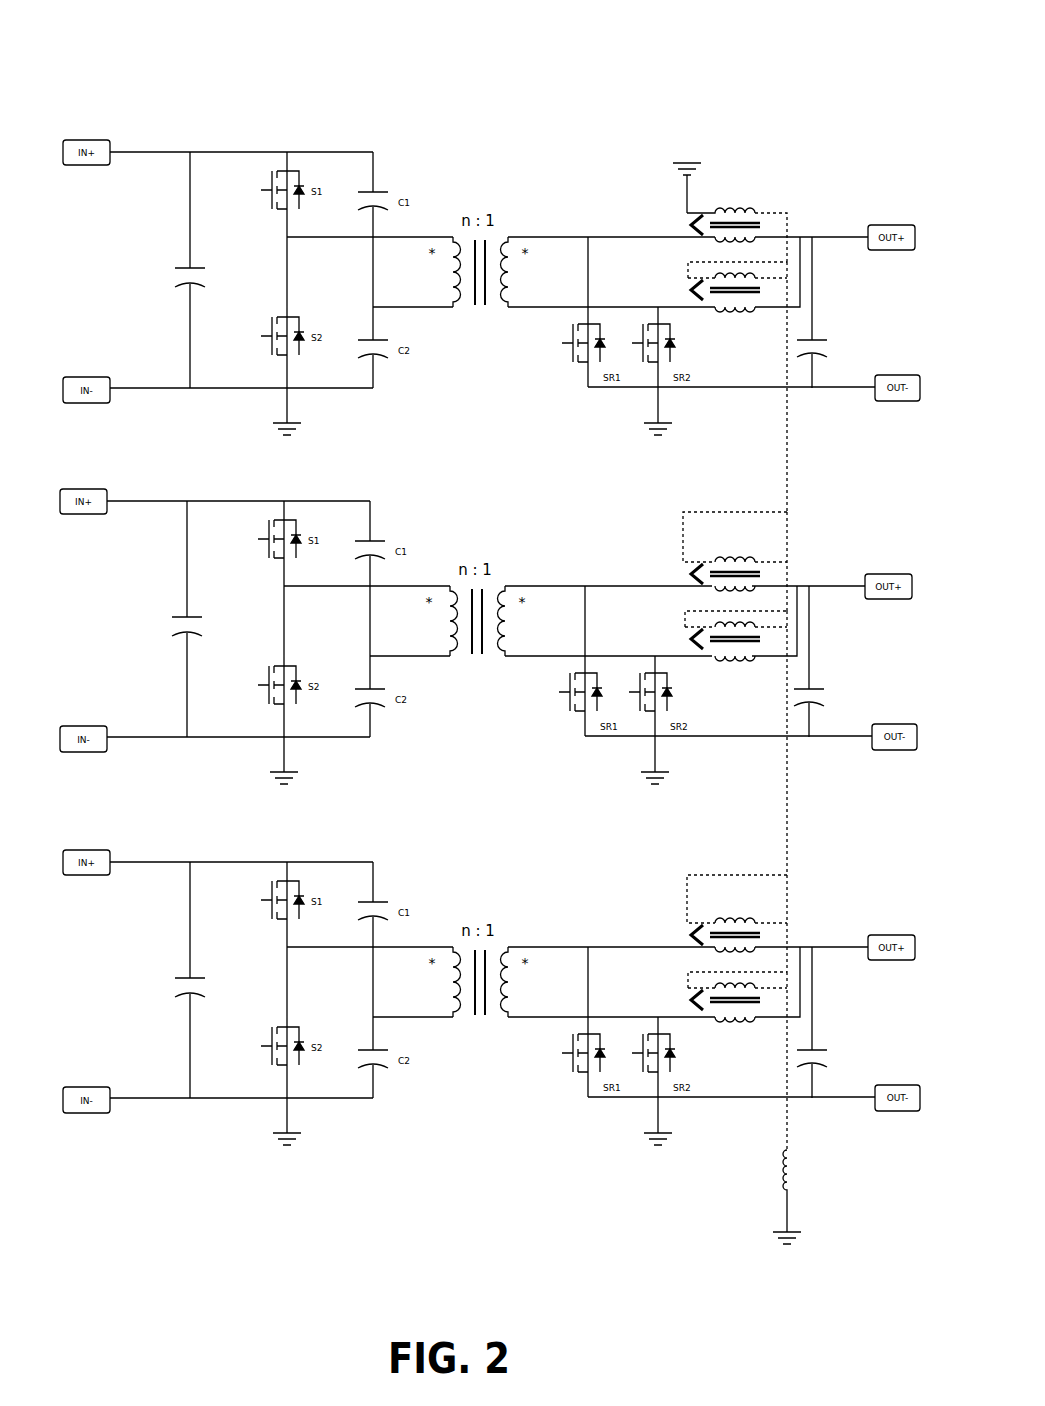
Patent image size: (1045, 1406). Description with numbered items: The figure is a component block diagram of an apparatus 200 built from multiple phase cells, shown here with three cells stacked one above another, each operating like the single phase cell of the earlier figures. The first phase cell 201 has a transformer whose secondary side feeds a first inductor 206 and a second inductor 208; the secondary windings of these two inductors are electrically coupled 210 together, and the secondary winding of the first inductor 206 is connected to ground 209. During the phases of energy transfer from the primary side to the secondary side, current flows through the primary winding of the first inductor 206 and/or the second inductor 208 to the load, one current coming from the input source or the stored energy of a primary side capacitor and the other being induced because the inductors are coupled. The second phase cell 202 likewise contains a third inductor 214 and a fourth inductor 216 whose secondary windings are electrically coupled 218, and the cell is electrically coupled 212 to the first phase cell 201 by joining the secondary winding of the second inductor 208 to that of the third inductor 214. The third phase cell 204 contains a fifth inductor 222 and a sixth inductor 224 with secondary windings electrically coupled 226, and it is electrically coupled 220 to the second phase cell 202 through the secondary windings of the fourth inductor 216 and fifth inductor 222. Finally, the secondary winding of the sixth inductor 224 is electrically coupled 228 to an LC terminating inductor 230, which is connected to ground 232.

The apparatus 200 is at (195, 52).
The first phase cell 201 is at (473, 125).
The second phase cell 202 is at (535, 470).
The third phase cell 204 is at (495, 860).
The first inductor (L1) 206 is at (728, 252).
The second inductor (L2) 208 is at (738, 323).
The ground 209 is at (681, 177).
The electrical coupling 210 is at (788, 214).
The electrical coupling 212 is at (787, 413).
The third inductor (L3) 214 is at (681, 585).
The fourth inductor (L4) 216 is at (734, 662).
The electrical coupling 218 is at (774, 561).
The electrical coupling 220 is at (739, 743).
The fifth inductor (L5) 222 is at (681, 946).
The sixth inductor (L6) 224 is at (734, 1024).
The electrical coupling 226 is at (778, 923).
The electrical coupling 228 is at (741, 1062).
The LC terminating inductor 230 is at (754, 1191).
The ground 232 is at (742, 1245).